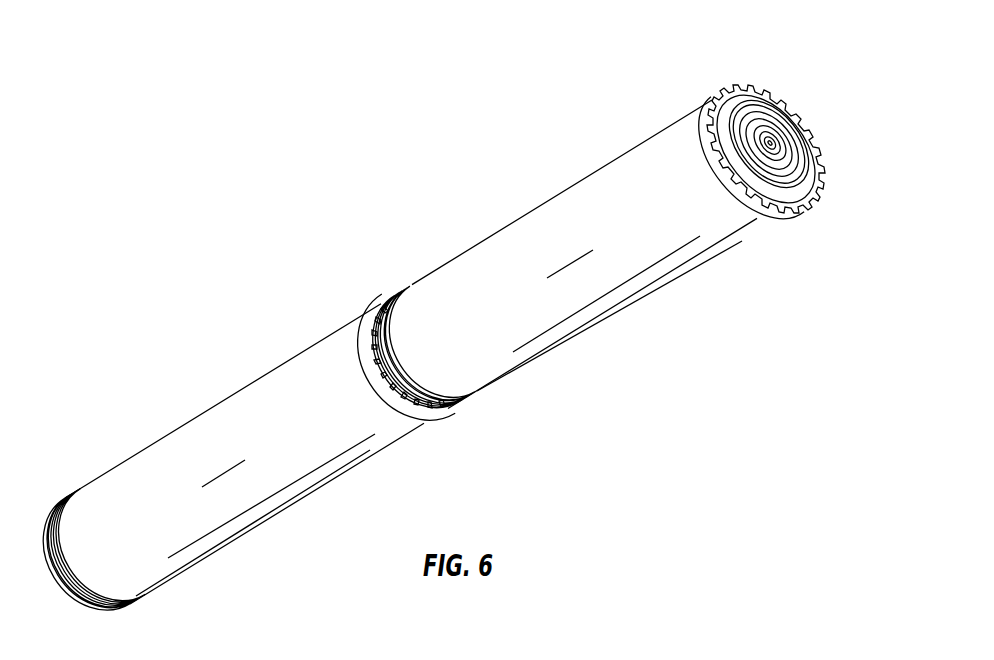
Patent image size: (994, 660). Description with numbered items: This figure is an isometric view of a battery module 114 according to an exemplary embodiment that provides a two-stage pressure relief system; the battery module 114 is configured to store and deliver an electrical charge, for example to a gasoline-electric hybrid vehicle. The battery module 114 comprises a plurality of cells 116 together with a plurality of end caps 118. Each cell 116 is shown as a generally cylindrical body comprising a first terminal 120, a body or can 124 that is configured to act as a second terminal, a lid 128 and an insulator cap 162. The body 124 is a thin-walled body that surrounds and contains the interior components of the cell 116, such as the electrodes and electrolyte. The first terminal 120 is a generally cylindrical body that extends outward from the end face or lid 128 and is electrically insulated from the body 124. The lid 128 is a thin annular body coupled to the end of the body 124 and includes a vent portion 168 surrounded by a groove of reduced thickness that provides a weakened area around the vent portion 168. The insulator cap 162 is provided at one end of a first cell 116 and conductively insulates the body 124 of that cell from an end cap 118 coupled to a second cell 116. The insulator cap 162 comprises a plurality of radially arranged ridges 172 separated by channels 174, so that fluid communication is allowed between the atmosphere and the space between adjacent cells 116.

The battery module 114 is at (278, 198).
The cell 116 is at (557, 333).
The end cap 118 is at (395, 290).
The first terminal 120 is at (766, 124).
The body or can 124 is at (567, 207).
The lid 128 is at (822, 172).
The insulator cap 162 is at (412, 408).
The vent portion 168 is at (764, 90).
The ridges 172 is at (803, 110).
The channels 174 is at (822, 138).